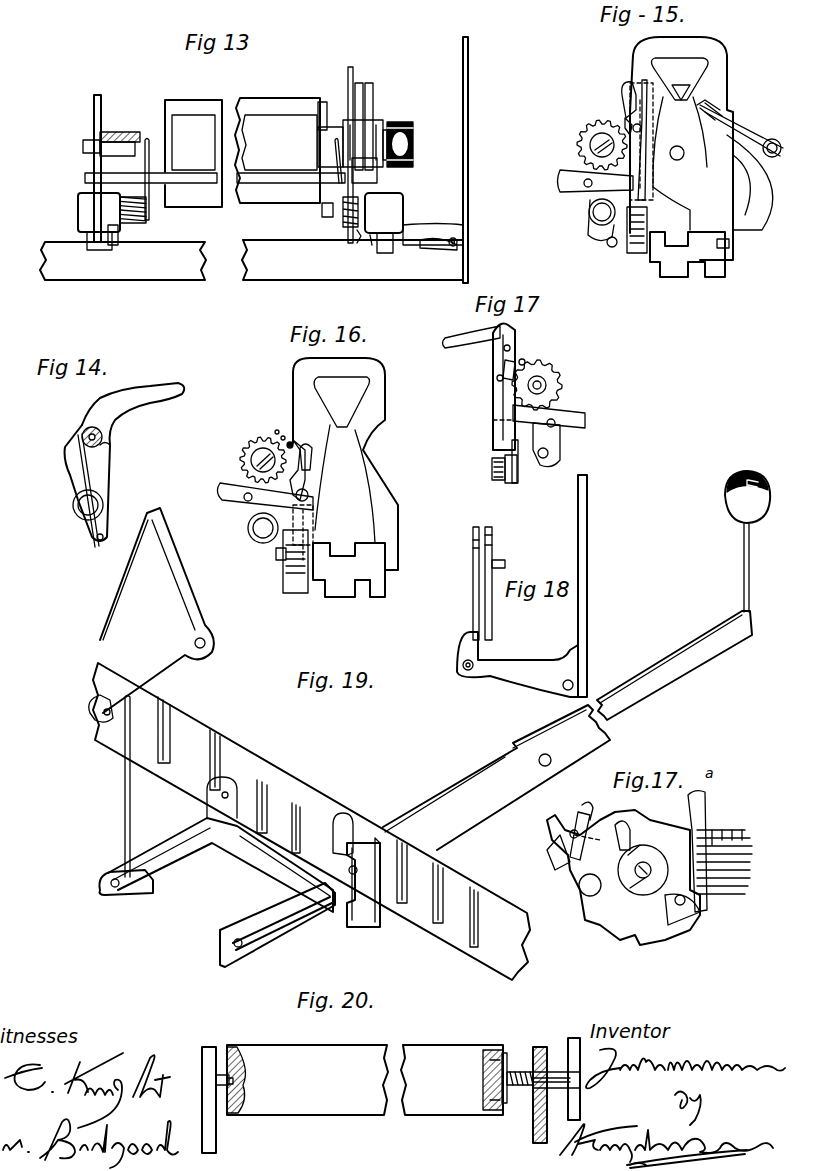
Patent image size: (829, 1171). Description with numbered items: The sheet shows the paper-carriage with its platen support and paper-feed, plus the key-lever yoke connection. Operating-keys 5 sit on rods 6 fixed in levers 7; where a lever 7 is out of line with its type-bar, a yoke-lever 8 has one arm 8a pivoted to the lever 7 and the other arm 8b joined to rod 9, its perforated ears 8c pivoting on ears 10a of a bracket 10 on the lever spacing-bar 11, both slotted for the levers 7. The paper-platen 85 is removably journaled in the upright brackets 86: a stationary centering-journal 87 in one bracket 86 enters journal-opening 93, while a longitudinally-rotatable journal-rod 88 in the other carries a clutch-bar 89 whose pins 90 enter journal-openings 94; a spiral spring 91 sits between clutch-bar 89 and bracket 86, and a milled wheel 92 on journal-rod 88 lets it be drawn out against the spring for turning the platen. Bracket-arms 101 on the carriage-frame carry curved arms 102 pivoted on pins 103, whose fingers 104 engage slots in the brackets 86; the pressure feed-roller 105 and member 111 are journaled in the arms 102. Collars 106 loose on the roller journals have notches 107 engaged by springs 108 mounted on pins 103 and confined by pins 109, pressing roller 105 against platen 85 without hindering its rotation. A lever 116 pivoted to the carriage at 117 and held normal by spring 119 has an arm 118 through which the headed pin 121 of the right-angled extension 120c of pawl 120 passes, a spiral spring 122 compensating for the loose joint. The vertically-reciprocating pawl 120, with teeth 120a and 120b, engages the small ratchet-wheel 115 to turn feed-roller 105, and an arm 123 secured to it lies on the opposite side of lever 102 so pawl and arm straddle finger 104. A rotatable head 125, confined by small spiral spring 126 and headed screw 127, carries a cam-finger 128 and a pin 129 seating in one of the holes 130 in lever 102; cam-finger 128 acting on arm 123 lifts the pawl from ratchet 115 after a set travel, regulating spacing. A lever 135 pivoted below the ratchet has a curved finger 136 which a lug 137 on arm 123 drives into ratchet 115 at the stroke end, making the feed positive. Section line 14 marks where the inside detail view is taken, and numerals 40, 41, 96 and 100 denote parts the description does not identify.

In FIG. 19, the operating-keys 5 is at (742, 470).
In FIG. 19, the rods 6 is at (744, 555).
In FIG. 19, the operating-levers 7 is at (567, 730).
In FIG. 19, the yoke-lever connection 8 is at (250, 860).
In FIG. 19, the arm of yoke-lever 8a is at (255, 935).
In FIG. 19, the arm of yoke-lever 8b is at (135, 895).
In FIG. 19, the perforated ears 8c is at (227, 780).
In FIG. 19, the rod 9 is at (125, 815).
In FIG. 19, the bracket 10 is at (315, 790).
In FIG. 19, the ears of bracket 10a is at (213, 770).
In FIG. 19, the lever spacing-bar 11 is at (318, 824).
In FIG. 13, the section line 14 is at (157, 300).
In FIG. 13, the base 40 is at (251, 260).
In FIG. 15, the base 40 is at (712, 262).
In FIG. 16, the base 40 is at (368, 585).
In FIG. 15, the slot in base 41 is at (674, 277).
In FIG. 16, the slot in base 41 is at (337, 590).
In FIG. 13, the main paper-platen 85 is at (260, 103).
In FIG. 15, the main paper-platen 85 is at (718, 108).
In FIG. 17A, the main paper-platen 85 is at (665, 840).
In FIG. 20, the main paper-platen 85 is at (365, 1080).
In FIG. 15, the upright brackets 86 is at (678, 85).
In FIG. 17A, the upright brackets 86 is at (625, 822).
In FIG. 20, the upright brackets 86 is at (217, 1147).
In FIG. 15, the stationary centering-journal 87 is at (712, 108).
In FIG. 20, the stationary centering-journal 87 is at (225, 1080).
In FIG. 20, the journal-rod 88 is at (580, 1085).
In FIG. 20, the clutch-bar 89 is at (507, 1070).
In FIG. 20, the pins 90 is at (490, 1052).
In FIG. 20, the spiral spring 91 is at (520, 1087).
In FIG. 20, the milled operating wheel 92 is at (574, 1038).
In FIG. 20, the journal-opening 93 is at (245, 1075).
In FIG. 20, the journal-openings 94 is at (490, 1078).
In FIG. 15, the sector 96 is at (752, 185).
In FIG. 17A, the sector 96 is at (680, 918).
In FIG. 15, the arm 100 is at (725, 117).
In FIG. 17A, the arm 100 is at (700, 818).
In FIG. 13, the bracket-arms 101 is at (106, 243).
In FIG. 15, the bracket-arms 101 is at (660, 205).
In FIG. 16, the bracket-arms 101 is at (330, 537).
In FIG. 13, the curved arms 102 is at (94, 125).
In FIG. 15, the curved arms 102 is at (632, 100).
In FIG. 14, the curved arms 102 is at (75, 470).
In FIG. 16, the curved arms 102 is at (305, 452).
In FIG. 17, the curved arms 102 is at (560, 445).
In FIG. 17A, the curved arms 102 is at (552, 858).
In FIG. 13, the pins 103 is at (150, 207).
In FIG. 15, the pins 103 is at (598, 225).
In FIG. 14, the pins 103 is at (85, 508).
In FIG. 16, the pins 103 is at (263, 528).
In FIG. 14, the fingers 104 is at (133, 414).
In FIG. 17, the fingers 104 is at (450, 342).
In FIG. 13, the pressure feed-roller 105 is at (279, 142).
In FIG. 13, the collars 106 is at (120, 132).
In FIG. 14, the collars 106 is at (100, 445).
In FIG. 17A, the collars 106 is at (608, 920).
In FIG. 13, the transverse grooves or notches 107 is at (337, 140).
In FIG. 14, the transverse grooves or notches 107 is at (82, 436).
In FIG. 13, the springs 108 is at (148, 220).
In FIG. 14, the springs 108 is at (97, 504).
In FIG. 13, the pins 109 is at (372, 243).
In FIG. 14, the pins 109 is at (101, 540).
In FIG. 13, the pivoted member 111 is at (267, 183).
In FIG. 18, the pivoted member 111 is at (466, 668).
In FIG. 13, the small ratchet-wheel 115 is at (350, 67).
In FIG. 15, the small ratchet-wheel 115 is at (580, 142).
In FIG. 17, the small ratchet-wheel 115 is at (562, 378).
In FIG. 13, the lever 116 is at (468, 150).
In FIG. 15, the lever 116 is at (712, 55).
In FIG. 16, the lever 116 is at (363, 460).
In FIG. 18, the lever 116 is at (587, 590).
In FIG. 13, the pivot 117 is at (451, 250).
In FIG. 15, the pivot 117 is at (610, 248).
In FIG. 16, the pivot 117 is at (278, 558).
In FIG. 13, the inwardly-extending arm 118 is at (420, 225).
In FIG. 18, the inwardly-extending arm 118 is at (516, 675).
In FIG. 13, the spring 119 is at (452, 235).
In FIG. 15, the spring 119 is at (638, 255).
In FIG. 16, the spring 119 is at (296, 593).
In FIG. 13, the vertically-reciprocating pawl 120 is at (375, 110).
In FIG. 15, the vertically-reciprocating pawl 120 is at (638, 82).
In FIG. 17, the vertically-reciprocating pawl 120 is at (498, 372).
In FIG. 18, the vertically-reciprocating pawl 120 is at (473, 544).
In FIG. 17A, the vertically-reciprocating pawl 120 is at (587, 818).
In FIG. 17, the tooth of pawl 120a is at (510, 345).
In FIG. 17A, the tooth of pawl 120a is at (575, 830).
In FIG. 17, the tooth of pawl 120b is at (498, 405).
In FIG. 17, the right-angled extension 120c is at (520, 470).
In FIG. 17, the headed pin 121 is at (492, 470).
In FIG. 17, the spiral spring 122 is at (505, 460).
In FIG. 13, the arm 123 is at (373, 90).
In FIG. 15, the arm 123 is at (628, 120).
In FIG. 16, the arm 123 is at (310, 462).
In FIG. 17, the arm 123 is at (500, 372).
In FIG. 18, the arm 123 is at (494, 560).
In FIG. 17A, the arm 123 is at (580, 812).
In FIG. 13, the rotatable head 125 is at (410, 124).
In FIG. 16, the rotatable head 125 is at (240, 462).
In FIG. 13, the small spiral spring 126 is at (413, 126).
In FIG. 13, the headed screw 127 is at (414, 149).
In FIG. 16, the headed screw 127 is at (242, 455).
In FIG. 16, the cam-finger 128 is at (292, 443).
In FIG. 16, the inwardly-projecting pin 129 is at (284, 436).
In FIG. 16, the series of holes 130 is at (277, 430).
In FIG. 17, the series of holes 130 is at (526, 362).
In FIG. 15, the lever 135 is at (565, 185).
In FIG. 16, the lever 135 is at (232, 498).
In FIG. 13, the curved finger 136 is at (366, 175).
In FIG. 17, the curved finger 136 is at (560, 410).
In FIG. 15, the lug 137 is at (660, 128).
In FIG. 16, the lug 137 is at (310, 498).
In FIG. 18, the lug 137 is at (492, 538).
In FIG. 17A, the lug 137 is at (570, 835).